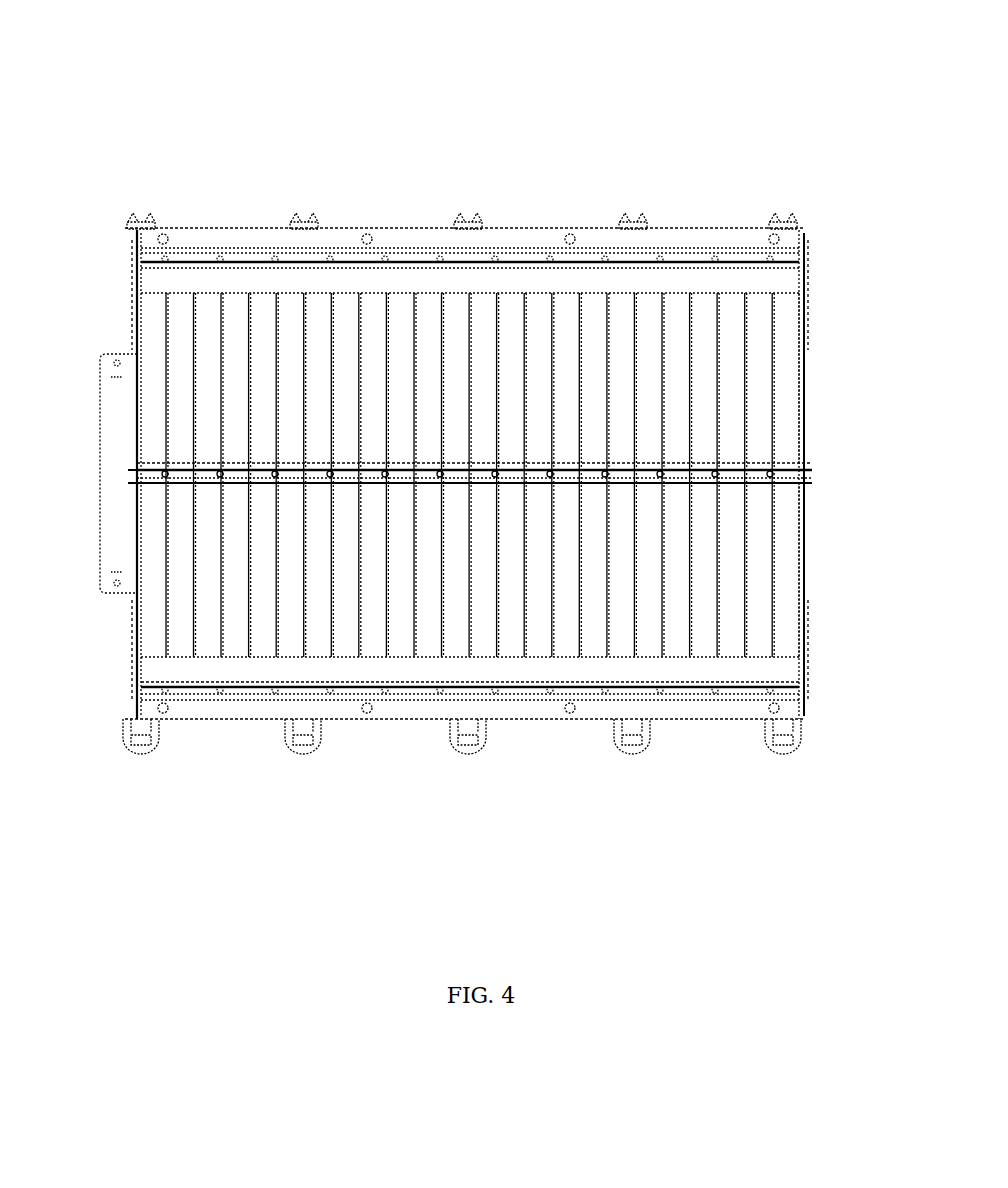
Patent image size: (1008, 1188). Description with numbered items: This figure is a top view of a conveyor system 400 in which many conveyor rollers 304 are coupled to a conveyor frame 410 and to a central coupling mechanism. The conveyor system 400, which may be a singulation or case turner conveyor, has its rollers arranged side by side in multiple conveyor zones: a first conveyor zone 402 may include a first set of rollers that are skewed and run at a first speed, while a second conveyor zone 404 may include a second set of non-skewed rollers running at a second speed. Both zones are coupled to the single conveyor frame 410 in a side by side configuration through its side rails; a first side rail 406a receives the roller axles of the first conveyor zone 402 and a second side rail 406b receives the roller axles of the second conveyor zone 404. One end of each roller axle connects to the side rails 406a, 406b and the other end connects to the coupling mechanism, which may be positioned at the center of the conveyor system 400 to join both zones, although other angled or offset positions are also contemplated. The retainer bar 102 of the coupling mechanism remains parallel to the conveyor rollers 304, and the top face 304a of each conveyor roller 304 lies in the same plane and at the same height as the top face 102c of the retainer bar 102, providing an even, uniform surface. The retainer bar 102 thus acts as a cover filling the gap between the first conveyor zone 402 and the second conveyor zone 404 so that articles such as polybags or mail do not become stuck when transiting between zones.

The conveyor system 400 is at (403, 133).
The conveyor frame 410 is at (543, 207).
The first side rail 406a is at (752, 237).
The second side rail 406b is at (672, 713).
The conveyor rollers 304 is at (405, 380).
The top face of the conveyor roller 304a is at (152, 513).
The retainer bar 102 is at (420, 470).
The top face of the retainer bar 102c is at (137, 473).
The first conveyor zone 402 is at (778, 370).
The second conveyor zone 404 is at (778, 558).